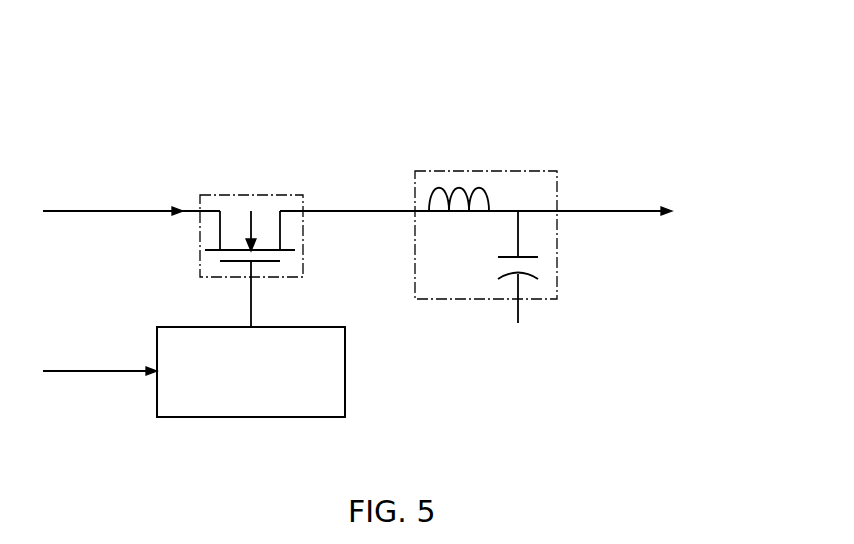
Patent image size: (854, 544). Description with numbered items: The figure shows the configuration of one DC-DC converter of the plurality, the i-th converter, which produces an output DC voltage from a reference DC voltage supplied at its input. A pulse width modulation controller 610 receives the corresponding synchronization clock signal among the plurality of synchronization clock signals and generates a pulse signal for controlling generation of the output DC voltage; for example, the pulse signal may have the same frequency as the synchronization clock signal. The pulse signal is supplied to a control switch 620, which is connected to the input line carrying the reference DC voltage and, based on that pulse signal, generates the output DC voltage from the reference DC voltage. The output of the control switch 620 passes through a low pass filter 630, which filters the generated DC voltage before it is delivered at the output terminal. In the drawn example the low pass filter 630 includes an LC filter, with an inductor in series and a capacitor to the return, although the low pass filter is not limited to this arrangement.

The control switch 620 is at (250, 195).
The low pass filter 630 is at (485, 171).
The pulse width modulation (PWM) controller 610 is at (345, 370).